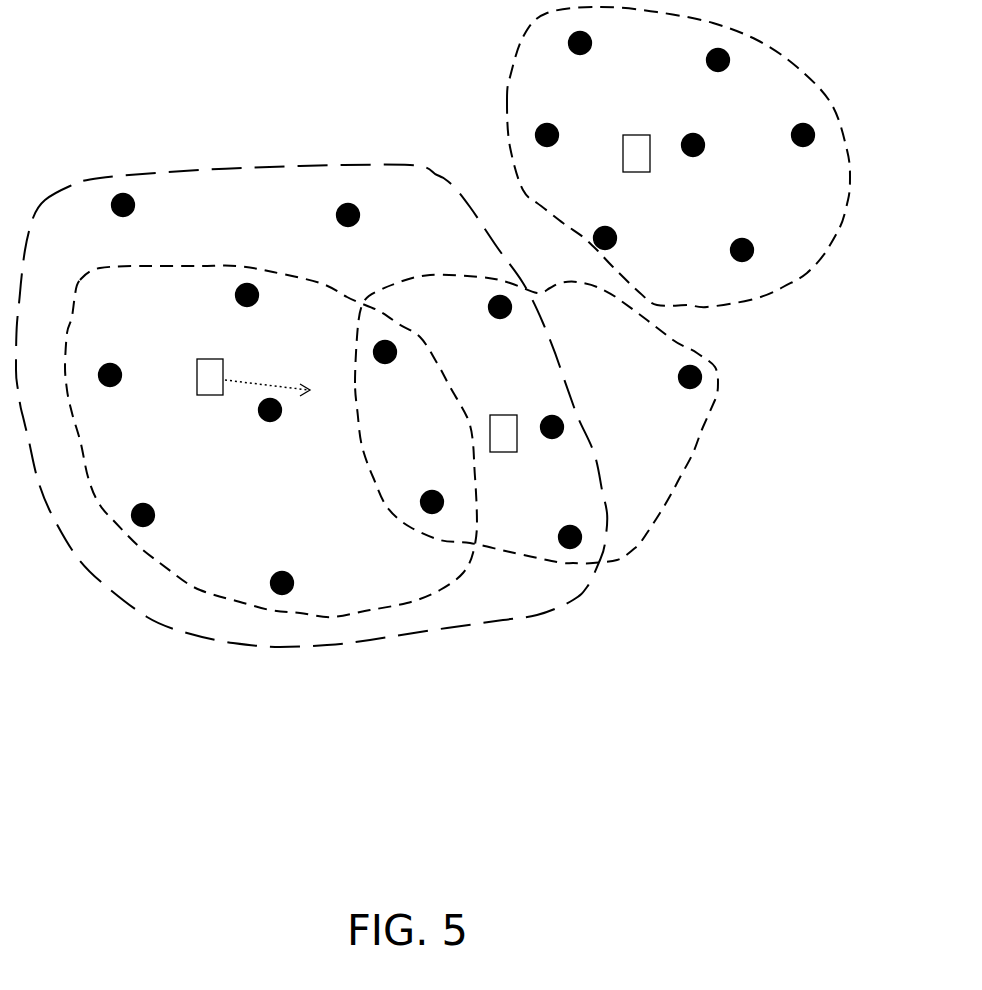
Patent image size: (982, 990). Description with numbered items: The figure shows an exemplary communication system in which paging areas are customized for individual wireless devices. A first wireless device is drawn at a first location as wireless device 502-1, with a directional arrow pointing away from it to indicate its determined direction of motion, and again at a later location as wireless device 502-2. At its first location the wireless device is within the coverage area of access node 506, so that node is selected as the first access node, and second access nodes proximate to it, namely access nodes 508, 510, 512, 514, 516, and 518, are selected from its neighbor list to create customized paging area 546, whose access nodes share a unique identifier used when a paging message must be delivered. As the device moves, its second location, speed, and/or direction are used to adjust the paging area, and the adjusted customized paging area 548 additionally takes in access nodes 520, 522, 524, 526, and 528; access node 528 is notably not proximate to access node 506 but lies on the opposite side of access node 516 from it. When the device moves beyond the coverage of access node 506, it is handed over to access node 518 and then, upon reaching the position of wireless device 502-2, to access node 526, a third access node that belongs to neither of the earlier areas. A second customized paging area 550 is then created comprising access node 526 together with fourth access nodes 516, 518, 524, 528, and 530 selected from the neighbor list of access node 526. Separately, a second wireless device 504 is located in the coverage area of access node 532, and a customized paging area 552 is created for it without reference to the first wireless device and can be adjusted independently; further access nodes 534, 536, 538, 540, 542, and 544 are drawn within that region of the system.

The wireless device in first location 502-1 is at (207, 395).
The wireless device in second location 502-2 is at (499, 415).
The second wireless device 504 is at (632, 135).
The access node 506 is at (268, 421).
The access node 508 is at (108, 386).
The access node 510 is at (236, 292).
The access node 512 is at (154, 512).
The access node 514 is at (293, 580).
The access node 516 is at (436, 491).
The access node 518 is at (385, 363).
The access node 520 is at (134, 203).
The access node 522 is at (359, 213).
The access node 524 is at (489, 303).
The access node 526 is at (554, 438).
The access node 528 is at (559, 533).
The access node 530 is at (679, 374).
The access node 532 is at (696, 156).
The node 534 is at (551, 124).
The node 536 is at (591, 41).
The node 538 is at (721, 71).
The node 540 is at (800, 146).
The node 542 is at (608, 227).
The node 544 is at (731, 248).
The customized paging area 546 is at (193, 593).
The adjusted customized paging area 548 is at (298, 648).
The second customized paging area 550 is at (642, 548).
The customized paging area 552 is at (508, 78).